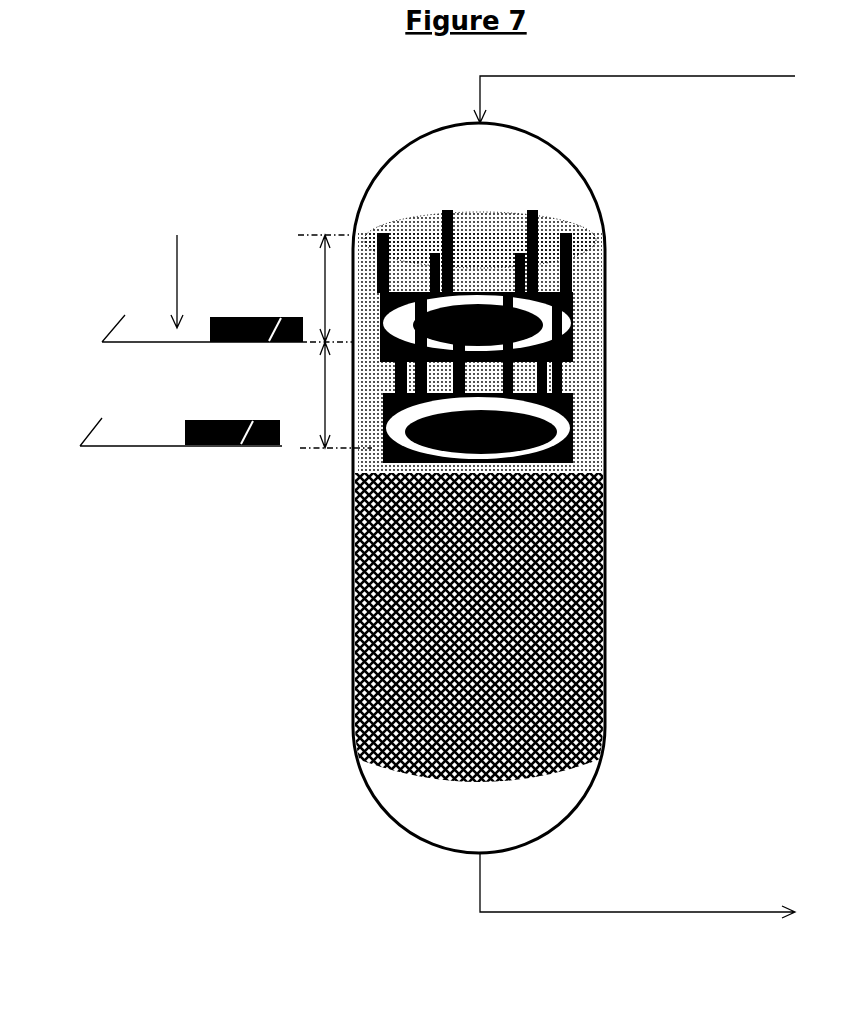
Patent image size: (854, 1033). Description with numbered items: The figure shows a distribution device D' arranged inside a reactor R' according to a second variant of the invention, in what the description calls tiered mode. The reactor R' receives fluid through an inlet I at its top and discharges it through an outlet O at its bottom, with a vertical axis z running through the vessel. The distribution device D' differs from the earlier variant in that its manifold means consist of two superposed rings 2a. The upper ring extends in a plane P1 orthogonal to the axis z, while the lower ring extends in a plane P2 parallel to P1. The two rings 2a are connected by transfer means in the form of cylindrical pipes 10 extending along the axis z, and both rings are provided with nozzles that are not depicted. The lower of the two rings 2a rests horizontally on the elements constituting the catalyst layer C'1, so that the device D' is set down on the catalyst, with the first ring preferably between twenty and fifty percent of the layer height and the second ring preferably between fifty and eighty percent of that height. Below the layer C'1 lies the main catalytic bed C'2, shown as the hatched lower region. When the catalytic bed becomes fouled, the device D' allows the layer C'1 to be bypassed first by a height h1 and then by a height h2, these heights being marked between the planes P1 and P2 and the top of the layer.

The reactor R' is at (448, 465).
The inlet I is at (650, 90).
The outlet O is at (656, 893).
The layer of catalytic bed C'1 is at (530, 354).
The second chamber (catalyst bed) C'2 is at (529, 627).
The distribution device D' is at (569, 336).
The cylindrical pipes 10 is at (555, 411).
The superposed rings 2a is at (388, 458).
The axis z is at (183, 281).
The height h1 is at (320, 288).
The height h2 is at (330, 395).
The plane P1 is at (204, 328).
The plane P2 is at (181, 432).